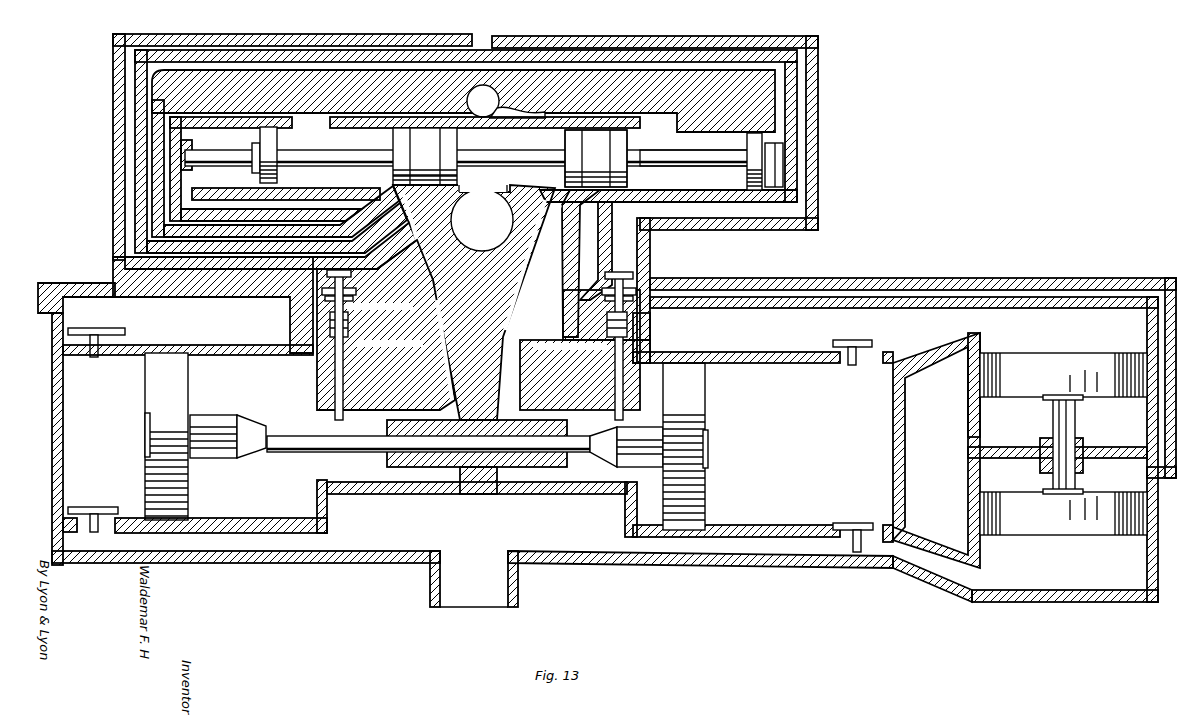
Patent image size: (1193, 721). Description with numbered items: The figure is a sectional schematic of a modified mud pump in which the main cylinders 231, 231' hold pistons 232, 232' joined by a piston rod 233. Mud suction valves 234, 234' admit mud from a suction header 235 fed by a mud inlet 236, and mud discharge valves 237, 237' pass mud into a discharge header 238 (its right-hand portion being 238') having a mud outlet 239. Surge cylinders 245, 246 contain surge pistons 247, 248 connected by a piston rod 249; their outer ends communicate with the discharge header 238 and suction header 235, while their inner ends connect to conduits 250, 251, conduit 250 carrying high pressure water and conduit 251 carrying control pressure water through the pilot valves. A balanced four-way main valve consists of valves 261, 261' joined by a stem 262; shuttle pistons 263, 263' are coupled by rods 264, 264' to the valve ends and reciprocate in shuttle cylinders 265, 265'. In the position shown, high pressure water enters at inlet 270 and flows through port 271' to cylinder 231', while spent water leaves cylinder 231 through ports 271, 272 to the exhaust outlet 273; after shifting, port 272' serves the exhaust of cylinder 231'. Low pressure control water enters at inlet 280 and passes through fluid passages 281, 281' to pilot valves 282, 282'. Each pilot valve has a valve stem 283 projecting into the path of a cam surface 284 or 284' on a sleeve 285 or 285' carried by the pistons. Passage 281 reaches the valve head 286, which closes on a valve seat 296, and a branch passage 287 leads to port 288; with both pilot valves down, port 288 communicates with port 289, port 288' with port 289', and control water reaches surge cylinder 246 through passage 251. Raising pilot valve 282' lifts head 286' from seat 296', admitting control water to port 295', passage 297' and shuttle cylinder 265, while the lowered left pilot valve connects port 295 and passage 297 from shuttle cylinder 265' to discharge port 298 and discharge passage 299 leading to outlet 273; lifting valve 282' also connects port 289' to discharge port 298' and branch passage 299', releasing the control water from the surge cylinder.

The inlet 280 is at (478, 40).
The fluid passage 281 is at (292, 28).
The fluid passage 281' is at (655, 29).
The port 295 is at (466, 134).
The port 295' is at (540, 267).
The stem 262 is at (500, 120).
The exhaust outlet 273 is at (497, 107).
The port 272 is at (242, 131).
The port 272' is at (495, 133).
The passage 297 is at (237, 235).
The passage 297' is at (440, 253).
The discharge passage 299 is at (134, 152).
The branch discharge passage 299' is at (485, 217).
The rod 264 is at (472, 167).
The rod 264' is at (700, 169).
The shuttle cylinder 265 is at (228, 150).
The shuttle cylinder 265' is at (814, 175).
The shuttle piston 263 is at (247, 155).
The shuttle piston 263' is at (805, 161).
The port 271 is at (423, 157).
The port 271' is at (565, 173).
The valve 261 is at (447, 181).
The valve 261' is at (620, 159).
The inlet 270 is at (500, 195).
The discharge port 298 is at (423, 262).
The discharge port 298' is at (525, 265).
The port 289 is at (397, 307).
The port 289' is at (670, 324).
The pilot valve 282 is at (442, 350).
The pilot valve 282' is at (670, 343).
The valve head 286 is at (306, 301).
The valve head 286' is at (645, 272).
The valve seat 296 is at (359, 325).
The valve seat 296' is at (614, 335).
The branch passage 287 is at (312, 330).
The port 288 is at (353, 355).
The port 288' is at (555, 340).
The valve stem 283 is at (336, 380).
The mud outlet 239 is at (48, 284).
The mud discharge valve 237 is at (100, 331).
The mud discharge valve 237' is at (852, 340).
The discharge header 238 is at (188, 350).
The chamber 238' is at (763, 366).
The piston 232 is at (144, 436).
The piston 232' is at (704, 446).
The main cylinder 231 is at (195, 442).
The main cylinder 231' is at (759, 536).
The piston rod 233 is at (336, 448).
The mud suction valve 234 is at (93, 505).
The mud suction valve 234' is at (851, 523).
The suction header 235 is at (540, 556).
The mud inlet 236 is at (519, 593).
The sleeve 285 is at (213, 424).
The rod head 285' is at (624, 479).
The cam surface 284 is at (257, 428).
The cam 284' is at (595, 472).
The conduit 251 is at (1045, 291).
The conduit 250 is at (973, 443).
The surge cylinder 245 is at (981, 413).
The surge cylinder 246 is at (981, 476).
The surge piston 247 is at (1037, 367).
The surge piston 248 is at (1113, 532).
The piston rod 249 is at (1075, 428).